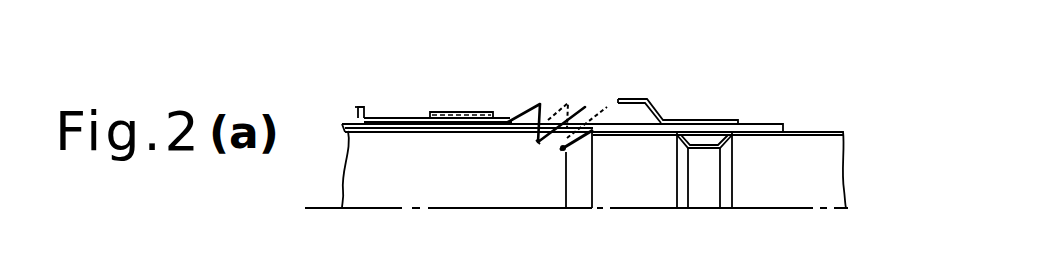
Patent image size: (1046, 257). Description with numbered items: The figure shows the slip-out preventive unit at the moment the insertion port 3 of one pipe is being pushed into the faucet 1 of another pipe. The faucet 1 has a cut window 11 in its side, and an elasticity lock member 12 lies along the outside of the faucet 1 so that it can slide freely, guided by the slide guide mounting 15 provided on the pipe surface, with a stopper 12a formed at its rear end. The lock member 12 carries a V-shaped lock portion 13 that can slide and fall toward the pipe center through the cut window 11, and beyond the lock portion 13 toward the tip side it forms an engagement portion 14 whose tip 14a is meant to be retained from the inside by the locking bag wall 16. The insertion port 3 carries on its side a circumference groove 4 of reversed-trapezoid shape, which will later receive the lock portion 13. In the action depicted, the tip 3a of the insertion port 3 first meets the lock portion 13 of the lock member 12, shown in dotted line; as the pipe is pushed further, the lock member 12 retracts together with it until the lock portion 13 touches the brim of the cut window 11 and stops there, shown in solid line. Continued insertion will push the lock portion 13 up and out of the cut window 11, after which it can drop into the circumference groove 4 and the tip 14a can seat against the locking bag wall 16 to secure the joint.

The faucet 1 is at (765, 125).
The insertion port 3 is at (605, 188).
The tip of insertion port 3a is at (568, 150).
The circumference groove 4 is at (703, 148).
The cut window 11 is at (613, 132).
The elasticity lock member 12 is at (395, 122).
The stopper 12a is at (357, 106).
The lock portion 13 is at (535, 143).
The engagement portion 14 is at (560, 122).
The tip of engagement portion 14a is at (573, 103).
The slide guide mounting 15 is at (465, 112).
The locking bag wall 16 is at (658, 112).